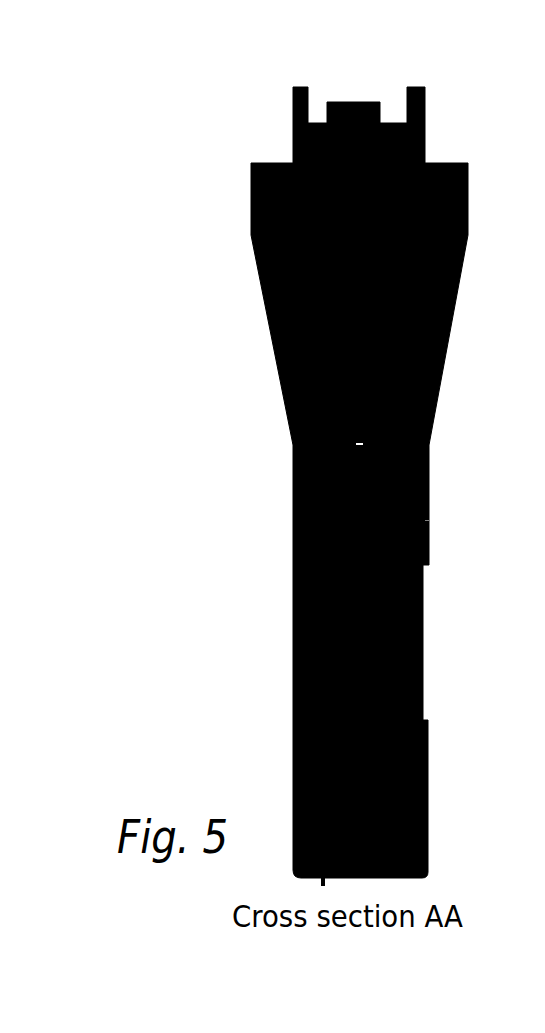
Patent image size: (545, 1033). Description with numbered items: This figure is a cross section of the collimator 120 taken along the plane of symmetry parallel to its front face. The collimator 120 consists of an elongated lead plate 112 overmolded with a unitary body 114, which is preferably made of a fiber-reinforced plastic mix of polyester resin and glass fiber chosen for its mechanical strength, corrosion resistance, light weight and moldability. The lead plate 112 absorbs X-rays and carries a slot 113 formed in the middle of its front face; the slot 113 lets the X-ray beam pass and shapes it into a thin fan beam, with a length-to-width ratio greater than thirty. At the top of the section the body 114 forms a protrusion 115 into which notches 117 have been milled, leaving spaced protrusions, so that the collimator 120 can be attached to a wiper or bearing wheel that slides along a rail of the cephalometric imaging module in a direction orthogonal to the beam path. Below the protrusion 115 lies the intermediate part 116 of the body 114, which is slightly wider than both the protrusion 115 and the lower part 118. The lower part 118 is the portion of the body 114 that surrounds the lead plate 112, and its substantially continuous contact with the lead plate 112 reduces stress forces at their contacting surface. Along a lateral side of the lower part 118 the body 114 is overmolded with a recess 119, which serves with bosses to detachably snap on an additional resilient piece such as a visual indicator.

The lead plate 112 is at (297, 463).
The slot 113 is at (295, 548).
The unitary body 114 is at (258, 300).
The protrusion 115 is at (296, 145).
The intermediate part 116 is at (262, 204).
The notches 117 is at (320, 99).
The lower part 118 is at (296, 752).
The recess 119 is at (429, 627).
The collimator 120 is at (142, 457).